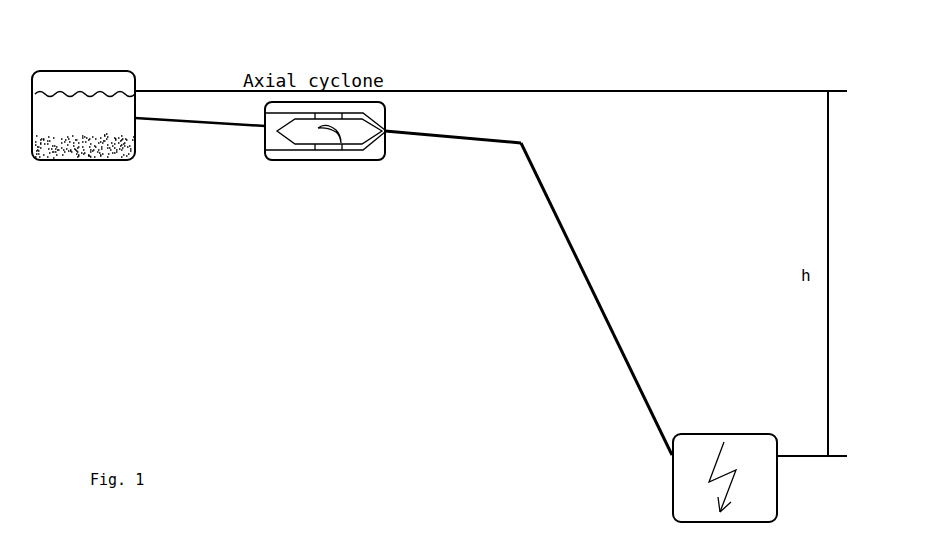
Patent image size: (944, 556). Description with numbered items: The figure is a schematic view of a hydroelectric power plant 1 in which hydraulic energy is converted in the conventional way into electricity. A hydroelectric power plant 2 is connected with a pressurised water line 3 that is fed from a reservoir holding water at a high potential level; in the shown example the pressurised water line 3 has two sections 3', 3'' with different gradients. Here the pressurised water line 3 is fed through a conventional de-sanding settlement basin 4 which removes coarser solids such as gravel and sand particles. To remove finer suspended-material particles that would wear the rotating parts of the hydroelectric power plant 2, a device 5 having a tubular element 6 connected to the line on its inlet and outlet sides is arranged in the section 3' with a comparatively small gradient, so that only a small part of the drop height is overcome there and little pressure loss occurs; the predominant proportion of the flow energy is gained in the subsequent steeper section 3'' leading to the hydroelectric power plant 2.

The hydroelectric power plant 1 is at (448, 310).
The hydroelectric power plant 2 is at (660, 500).
The pressurised water line 3 is at (537, 246).
The section of the pressurised water line 3' is at (454, 90).
The section of the pressurised water line 3'' is at (605, 299).
The de-sanding settlement basin 4 is at (75, 170).
The device for removing suspended-material particles 5 is at (363, 150).
The tubular element 6 is at (362, 113).